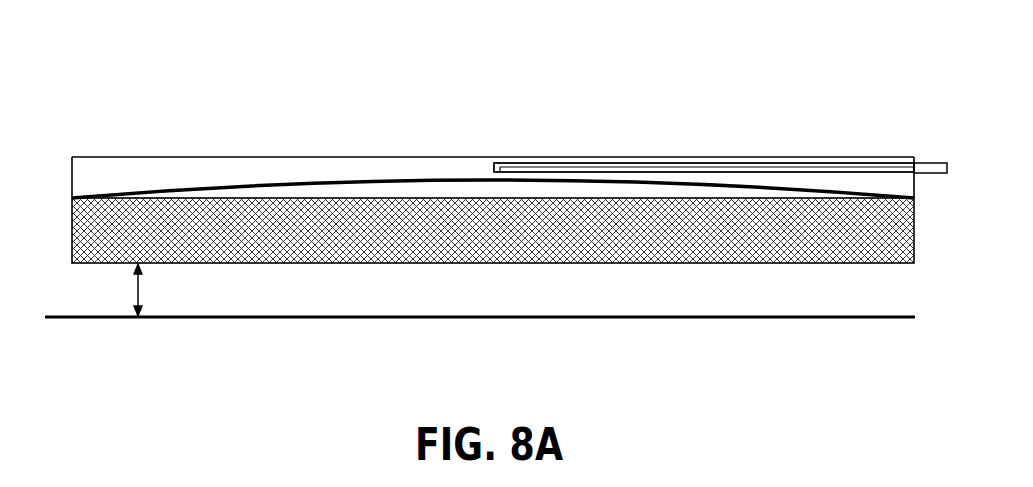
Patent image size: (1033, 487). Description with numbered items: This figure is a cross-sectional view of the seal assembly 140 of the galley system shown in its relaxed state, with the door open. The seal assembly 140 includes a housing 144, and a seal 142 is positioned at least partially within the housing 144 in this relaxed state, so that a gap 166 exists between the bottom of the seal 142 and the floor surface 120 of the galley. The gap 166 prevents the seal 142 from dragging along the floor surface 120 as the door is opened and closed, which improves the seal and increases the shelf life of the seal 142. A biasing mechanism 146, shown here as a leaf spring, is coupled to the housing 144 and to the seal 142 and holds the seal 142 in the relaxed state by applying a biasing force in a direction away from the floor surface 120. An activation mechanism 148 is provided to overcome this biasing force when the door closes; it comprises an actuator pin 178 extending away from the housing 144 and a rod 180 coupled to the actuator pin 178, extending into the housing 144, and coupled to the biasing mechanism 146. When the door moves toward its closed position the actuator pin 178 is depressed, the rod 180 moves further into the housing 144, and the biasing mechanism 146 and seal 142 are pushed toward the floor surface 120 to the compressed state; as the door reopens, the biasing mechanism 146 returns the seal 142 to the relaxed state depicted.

The seal assembly 140 is at (97, 87).
The housing 144 is at (377, 157).
The biasing mechanism 146 is at (288, 181).
The seal 142 is at (569, 263).
The rod 180 is at (652, 164).
The actuator pin 178 is at (929, 163).
The activation mechanism 148 is at (944, 144).
The floor surface 120 is at (291, 319).
The gap 166 is at (137, 295).